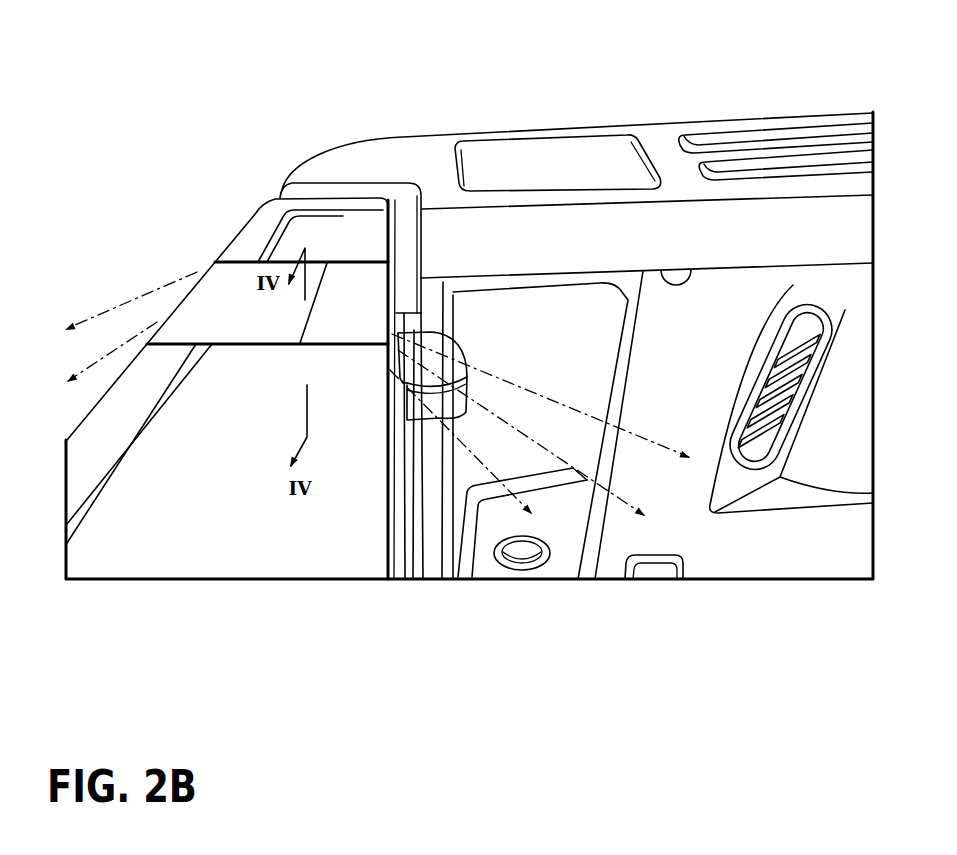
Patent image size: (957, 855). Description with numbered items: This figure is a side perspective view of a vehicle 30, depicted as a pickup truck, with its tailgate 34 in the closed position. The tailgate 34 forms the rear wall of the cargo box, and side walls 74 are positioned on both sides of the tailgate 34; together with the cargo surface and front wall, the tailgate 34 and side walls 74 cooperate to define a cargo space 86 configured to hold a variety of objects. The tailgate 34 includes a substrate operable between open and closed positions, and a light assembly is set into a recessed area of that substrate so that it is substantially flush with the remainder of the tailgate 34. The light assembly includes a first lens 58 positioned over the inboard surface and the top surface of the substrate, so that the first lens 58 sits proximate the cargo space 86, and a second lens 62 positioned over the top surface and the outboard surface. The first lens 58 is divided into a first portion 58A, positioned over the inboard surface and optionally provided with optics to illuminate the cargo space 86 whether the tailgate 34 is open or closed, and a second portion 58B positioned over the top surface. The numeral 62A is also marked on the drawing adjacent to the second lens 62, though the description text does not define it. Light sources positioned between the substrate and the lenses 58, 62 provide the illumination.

The vehicle 30 is at (656, 100).
The tailgate 34 is at (226, 226).
The first lens 58 is at (340, 262).
The first portion 58A is at (397, 330).
The second portion 58B is at (358, 282).
The second lens 62 is at (222, 297).
The hood panel edge 62A is at (203, 322).
The side walls 74 is at (756, 123).
The cargo space 86 is at (604, 336).